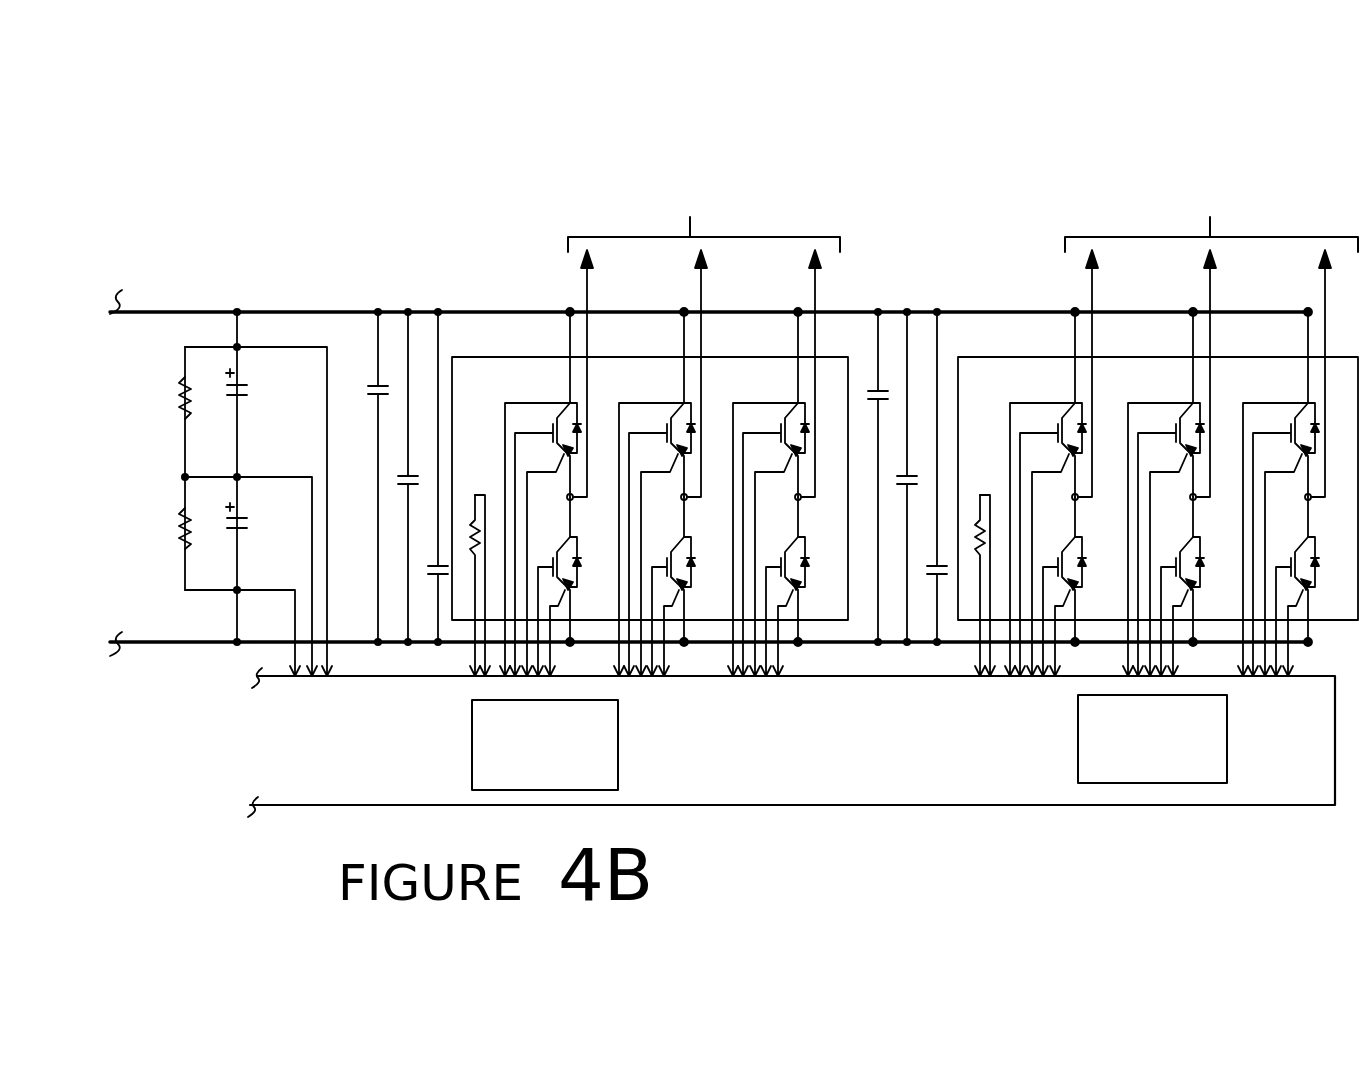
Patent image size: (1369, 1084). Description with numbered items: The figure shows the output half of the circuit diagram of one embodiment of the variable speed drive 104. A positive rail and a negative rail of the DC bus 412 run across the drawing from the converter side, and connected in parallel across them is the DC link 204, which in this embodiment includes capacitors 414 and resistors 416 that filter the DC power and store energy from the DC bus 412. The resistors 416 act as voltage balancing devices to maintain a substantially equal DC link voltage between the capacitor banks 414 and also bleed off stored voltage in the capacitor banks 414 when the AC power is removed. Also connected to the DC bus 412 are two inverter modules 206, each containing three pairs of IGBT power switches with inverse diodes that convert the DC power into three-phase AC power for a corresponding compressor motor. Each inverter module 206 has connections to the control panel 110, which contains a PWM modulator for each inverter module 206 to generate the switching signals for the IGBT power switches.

The variable speed drive 104 is at (326, 158).
The DC bus 412 is at (865, 312).
The DC link 204 is at (171, 583).
The resistors 416 is at (186, 380).
The capacitors 414 is at (243, 396).
The inverter modules 206 is at (505, 393).
The control panel 110 is at (1147, 807).